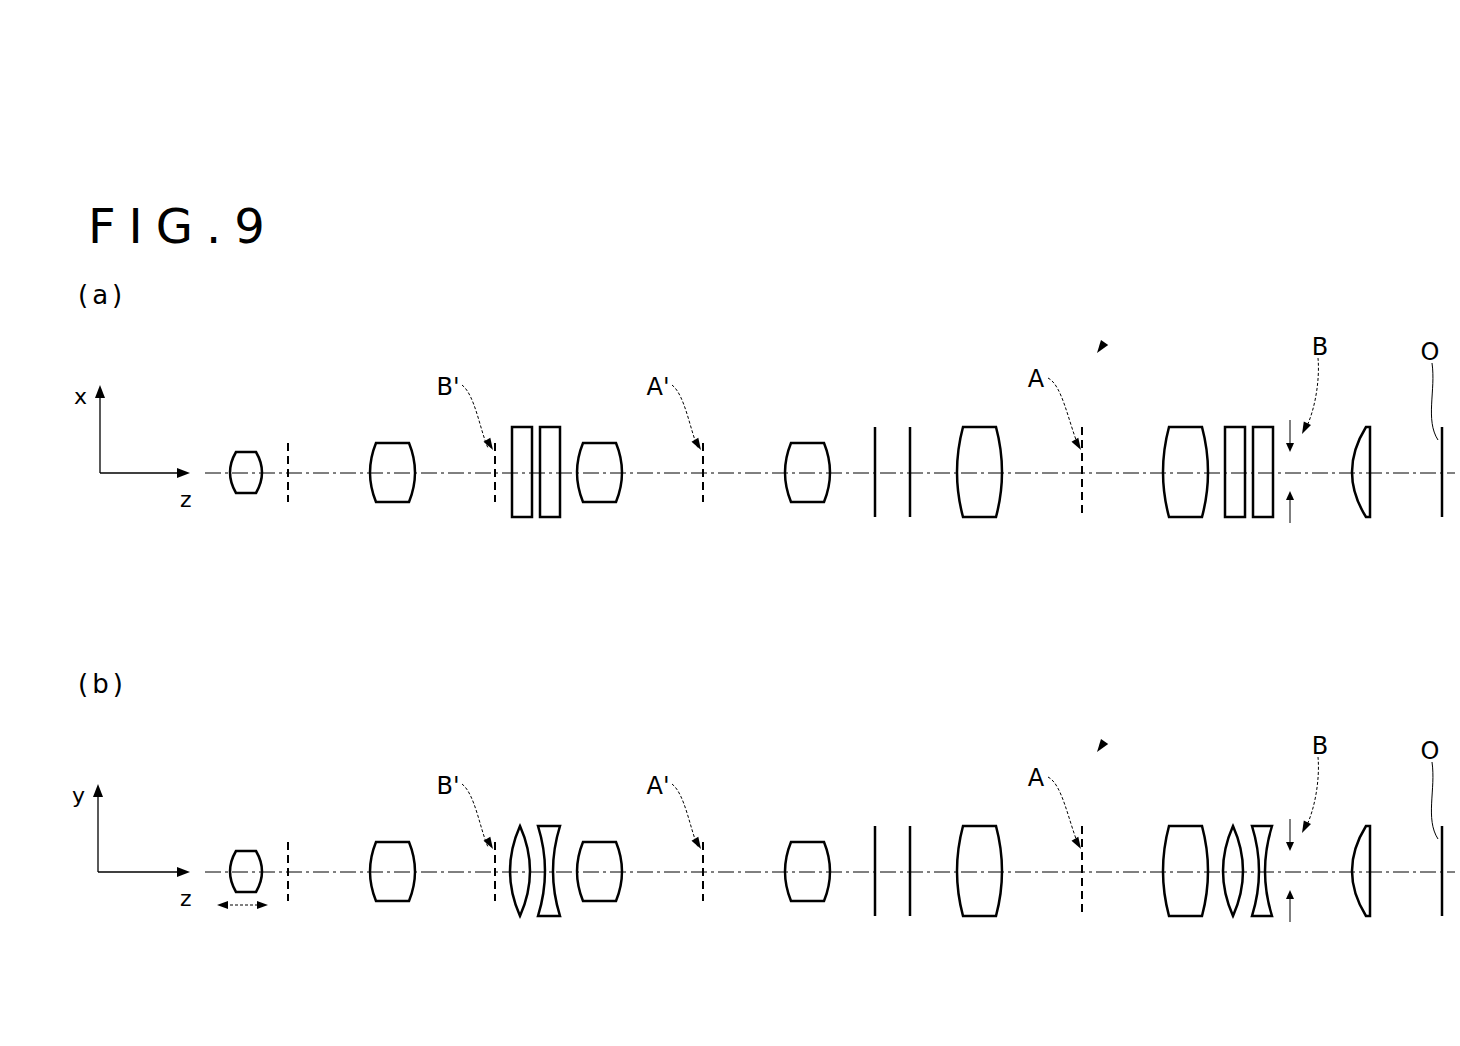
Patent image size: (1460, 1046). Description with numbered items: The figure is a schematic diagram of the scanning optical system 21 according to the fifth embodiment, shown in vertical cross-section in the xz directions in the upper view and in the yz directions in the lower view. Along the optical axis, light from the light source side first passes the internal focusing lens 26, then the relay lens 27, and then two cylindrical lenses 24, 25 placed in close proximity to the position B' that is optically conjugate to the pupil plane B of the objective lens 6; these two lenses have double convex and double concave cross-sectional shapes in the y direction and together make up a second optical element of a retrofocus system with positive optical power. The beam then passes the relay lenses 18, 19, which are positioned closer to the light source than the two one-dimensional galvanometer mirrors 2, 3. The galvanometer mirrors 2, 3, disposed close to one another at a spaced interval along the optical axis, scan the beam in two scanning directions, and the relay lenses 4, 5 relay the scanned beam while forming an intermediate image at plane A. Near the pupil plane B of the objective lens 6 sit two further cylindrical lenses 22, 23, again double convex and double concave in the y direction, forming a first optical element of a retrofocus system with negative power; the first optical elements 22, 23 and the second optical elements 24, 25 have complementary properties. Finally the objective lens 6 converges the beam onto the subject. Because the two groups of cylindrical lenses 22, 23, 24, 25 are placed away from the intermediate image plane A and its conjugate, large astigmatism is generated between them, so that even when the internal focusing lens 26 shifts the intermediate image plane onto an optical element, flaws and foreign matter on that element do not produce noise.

The one-dimensional galvanometer mirror 2 is at (874, 450).
The one-dimensional galvanometer mirror 3 is at (908, 450).
The relay lens 4 is at (976, 427).
The relay lens 5 is at (1182, 427).
The objective lens 6 is at (1366, 427).
The relay lens 18 is at (598, 443).
The relay lens 19 is at (806, 443).
The scanning optical system 21 is at (1105, 345).
The cylindrical lens 22 is at (1232, 427).
The cylindrical lens 23 is at (1262, 427).
The cylindrical lens 24 is at (520, 427).
The cylindrical lens 25 is at (550, 427).
The internal focusing lens 26 is at (246, 452).
The relay lens 27 is at (392, 443).